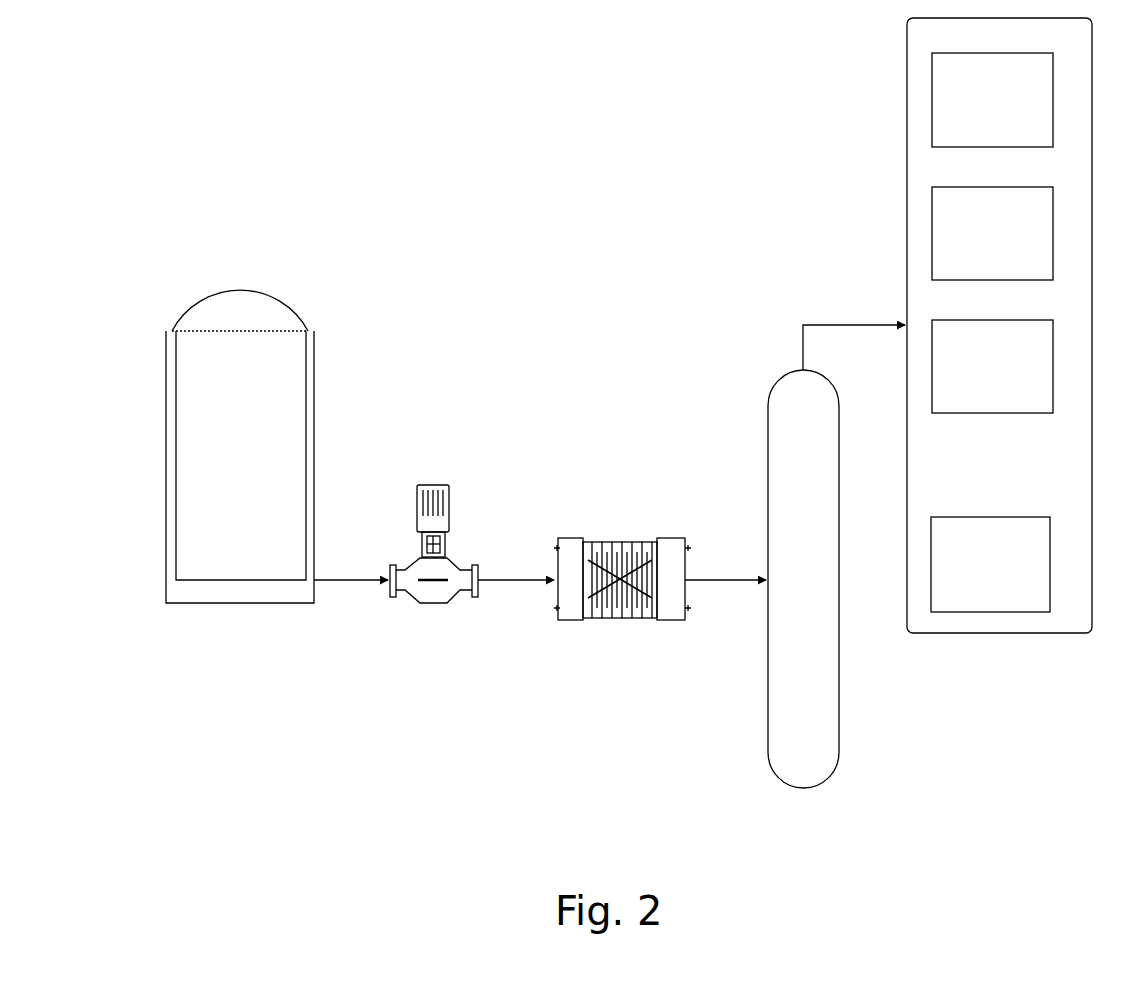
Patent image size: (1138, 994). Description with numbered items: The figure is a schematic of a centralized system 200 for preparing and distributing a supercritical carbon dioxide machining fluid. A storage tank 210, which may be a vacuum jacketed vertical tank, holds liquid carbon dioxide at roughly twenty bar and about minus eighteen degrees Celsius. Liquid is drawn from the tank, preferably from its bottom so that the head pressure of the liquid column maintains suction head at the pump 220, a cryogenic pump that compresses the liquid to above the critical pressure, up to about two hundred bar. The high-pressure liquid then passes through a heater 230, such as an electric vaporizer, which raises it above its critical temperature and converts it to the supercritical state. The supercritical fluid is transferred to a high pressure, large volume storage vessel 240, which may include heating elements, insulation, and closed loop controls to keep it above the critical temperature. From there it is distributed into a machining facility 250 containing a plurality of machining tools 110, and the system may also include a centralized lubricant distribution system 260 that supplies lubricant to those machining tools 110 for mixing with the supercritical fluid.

The system 200 is at (366, 176).
The storage tank 210 is at (163, 400).
The pump 220 is at (418, 607).
The heater 230 is at (613, 622).
The storage vessel 240 is at (768, 653).
The machining facility 250 is at (945, 325).
The machining tool 110 is at (992, 233).
The centralized lubricant distribution system 260 is at (990, 564).